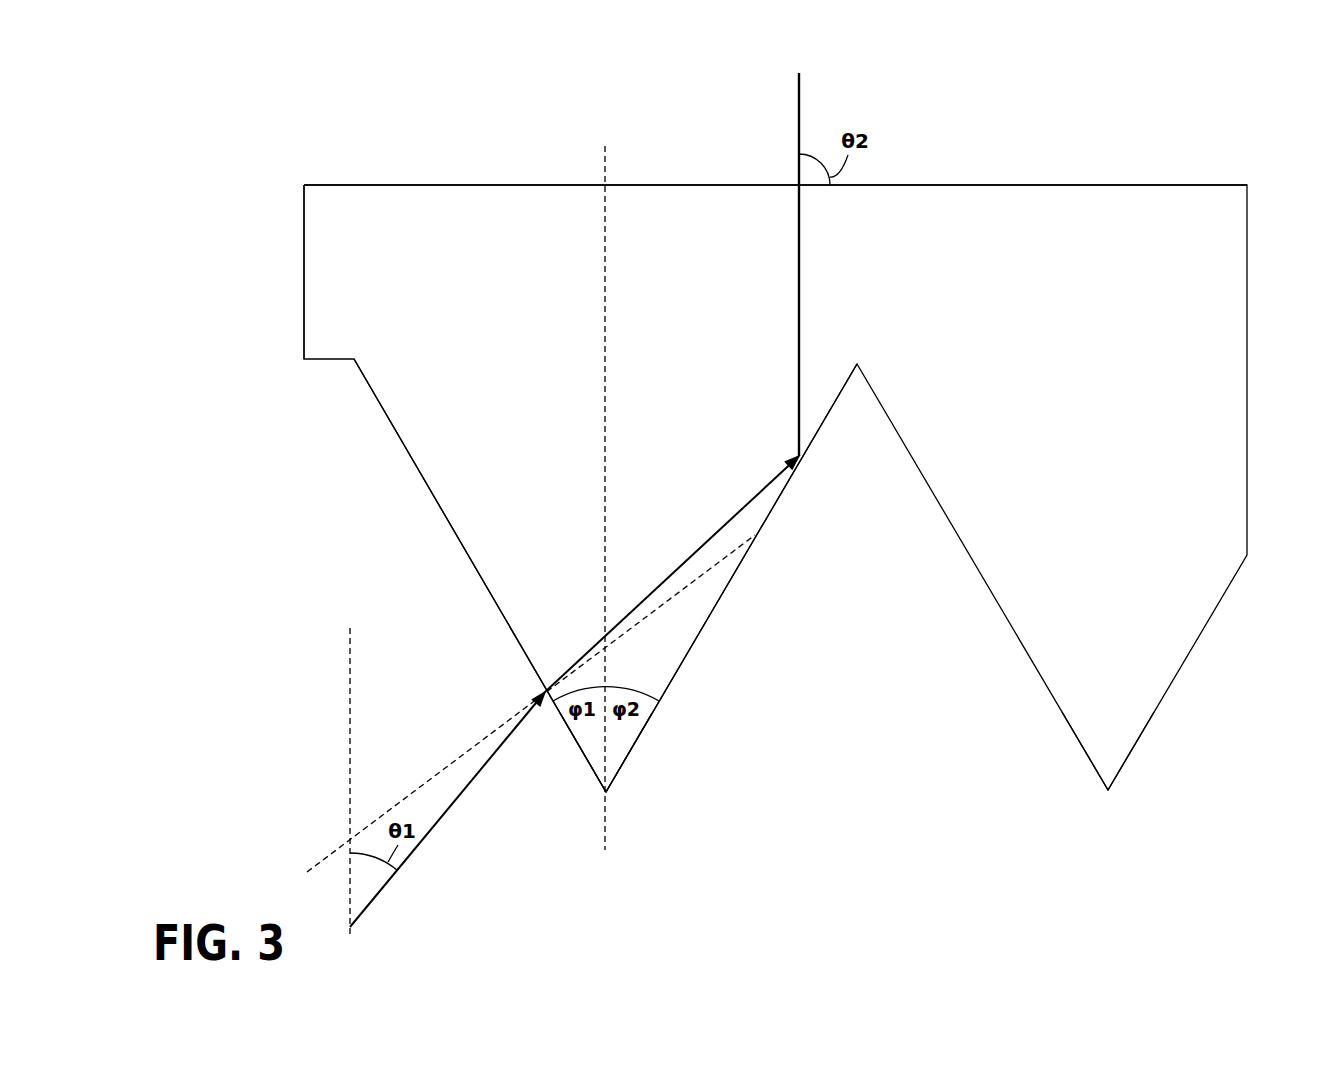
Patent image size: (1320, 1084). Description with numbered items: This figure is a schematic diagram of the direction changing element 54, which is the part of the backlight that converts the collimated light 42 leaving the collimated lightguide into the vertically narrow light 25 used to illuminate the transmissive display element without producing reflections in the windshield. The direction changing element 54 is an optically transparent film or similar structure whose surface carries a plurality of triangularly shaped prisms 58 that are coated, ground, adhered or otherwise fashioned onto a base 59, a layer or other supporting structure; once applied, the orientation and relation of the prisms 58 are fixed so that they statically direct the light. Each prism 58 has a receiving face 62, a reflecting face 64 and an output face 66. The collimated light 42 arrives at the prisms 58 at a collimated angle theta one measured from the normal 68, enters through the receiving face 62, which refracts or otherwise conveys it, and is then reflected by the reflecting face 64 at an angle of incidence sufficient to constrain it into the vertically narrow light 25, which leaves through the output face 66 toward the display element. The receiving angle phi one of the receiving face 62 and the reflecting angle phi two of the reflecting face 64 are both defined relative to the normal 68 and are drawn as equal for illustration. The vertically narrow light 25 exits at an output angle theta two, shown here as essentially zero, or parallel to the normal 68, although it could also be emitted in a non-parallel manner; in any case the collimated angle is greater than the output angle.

The vertically narrow light 25 is at (799, 107).
The collimated light 42 is at (440, 818).
The direction changing element 54 is at (1038, 132).
The prisms 58 is at (577, 743).
The base 59 is at (300, 255).
The receiving face 62 is at (448, 518).
The reflecting face 64 is at (815, 428).
The output face 66 is at (742, 185).
The normal 68 is at (606, 172).